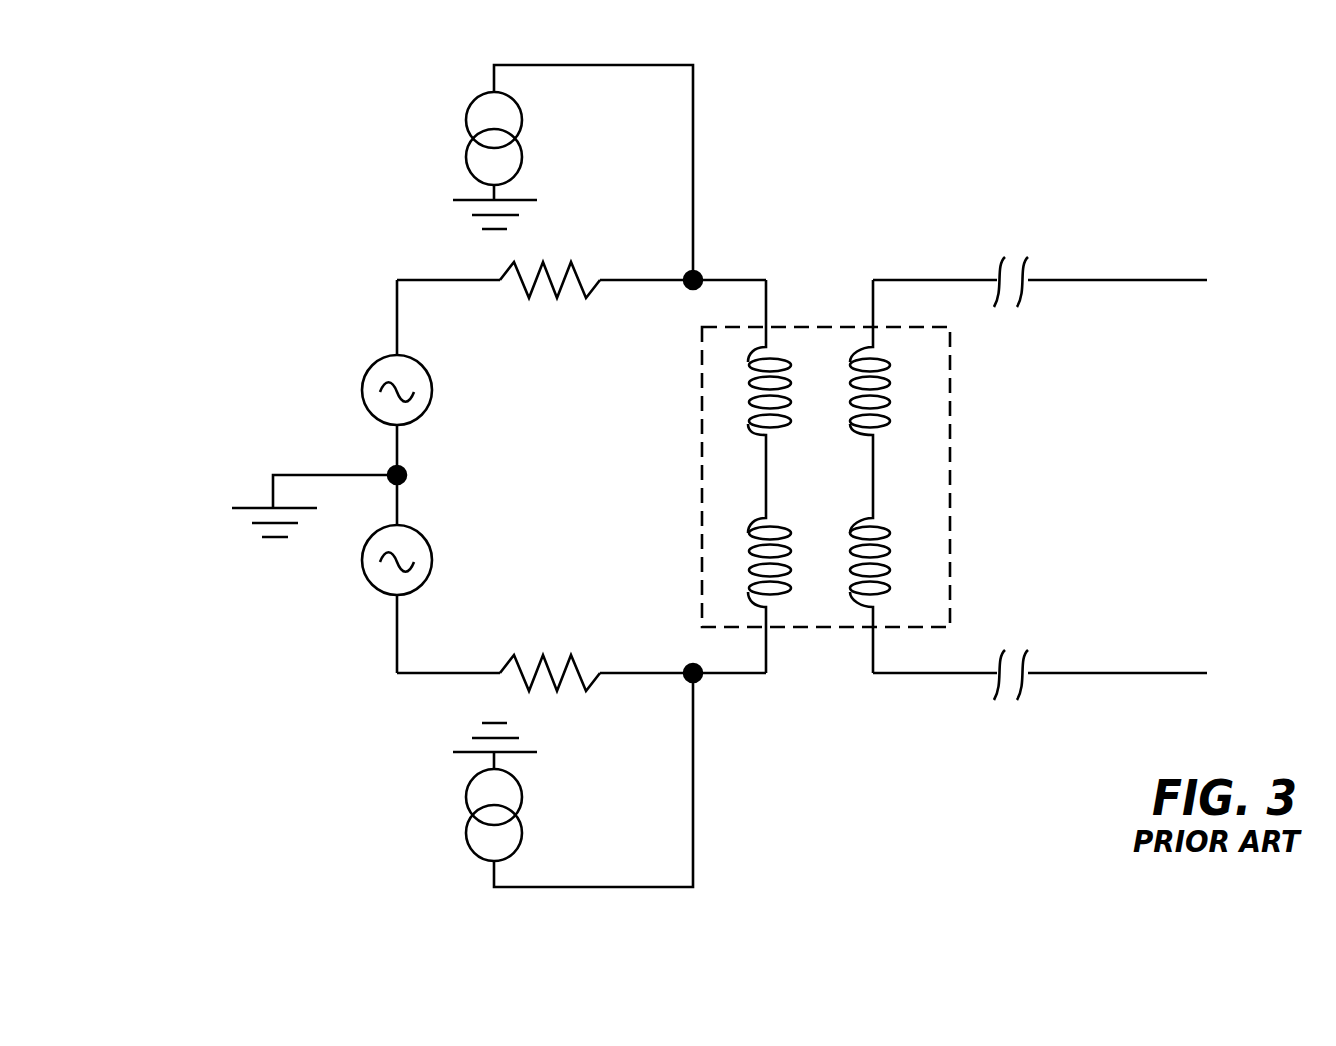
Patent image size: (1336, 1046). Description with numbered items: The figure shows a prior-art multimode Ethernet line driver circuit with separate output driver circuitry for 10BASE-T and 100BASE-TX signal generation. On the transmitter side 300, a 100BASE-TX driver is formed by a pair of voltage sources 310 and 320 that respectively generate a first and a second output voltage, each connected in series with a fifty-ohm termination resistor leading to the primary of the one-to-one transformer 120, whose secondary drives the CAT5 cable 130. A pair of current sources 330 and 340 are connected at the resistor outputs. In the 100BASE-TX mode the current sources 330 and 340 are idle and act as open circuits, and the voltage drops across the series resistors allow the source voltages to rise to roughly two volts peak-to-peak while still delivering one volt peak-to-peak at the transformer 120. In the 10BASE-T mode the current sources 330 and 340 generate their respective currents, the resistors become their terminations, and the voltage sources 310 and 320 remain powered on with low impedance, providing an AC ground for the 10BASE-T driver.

The transmitter side 300 is at (338, 666).
The voltage source 310 is at (336, 386).
The voltage source 320 is at (336, 572).
The current source 330 is at (438, 127).
The current source 340 is at (440, 814).
The transformer 120 is at (822, 652).
The CAT5 cable 130 is at (1040, 478).